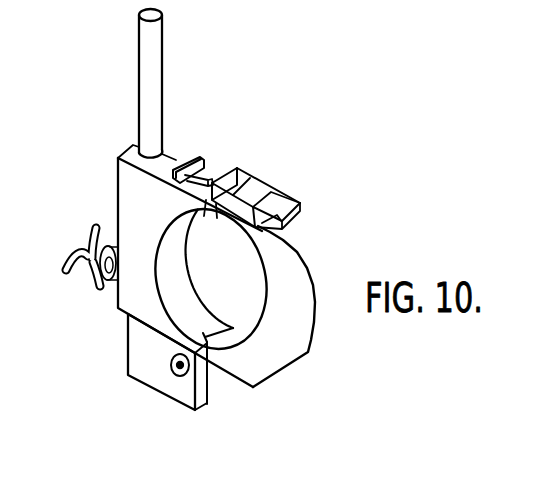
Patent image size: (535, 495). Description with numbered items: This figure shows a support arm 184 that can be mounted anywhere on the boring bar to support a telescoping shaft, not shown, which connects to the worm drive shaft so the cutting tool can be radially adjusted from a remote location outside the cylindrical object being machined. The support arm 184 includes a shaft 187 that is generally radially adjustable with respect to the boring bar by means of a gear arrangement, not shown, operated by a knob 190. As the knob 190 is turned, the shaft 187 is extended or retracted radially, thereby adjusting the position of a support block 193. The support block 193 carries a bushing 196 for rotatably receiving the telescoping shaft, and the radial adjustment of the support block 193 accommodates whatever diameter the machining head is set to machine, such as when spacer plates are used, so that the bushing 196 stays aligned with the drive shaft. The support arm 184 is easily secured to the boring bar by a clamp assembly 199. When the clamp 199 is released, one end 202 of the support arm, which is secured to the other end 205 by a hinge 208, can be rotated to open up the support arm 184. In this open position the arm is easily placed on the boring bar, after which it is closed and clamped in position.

The support arm 184 is at (168, 74).
The shaft 187 is at (143, 35).
The knob 190 is at (78, 289).
The support block 193 is at (128, 348).
The bushing 196 is at (174, 372).
The clamp assembly 199 is at (247, 175).
The one end of the support arm 202 is at (307, 253).
The other end of the support arm 205 is at (132, 180).
The hinge 208 is at (228, 377).